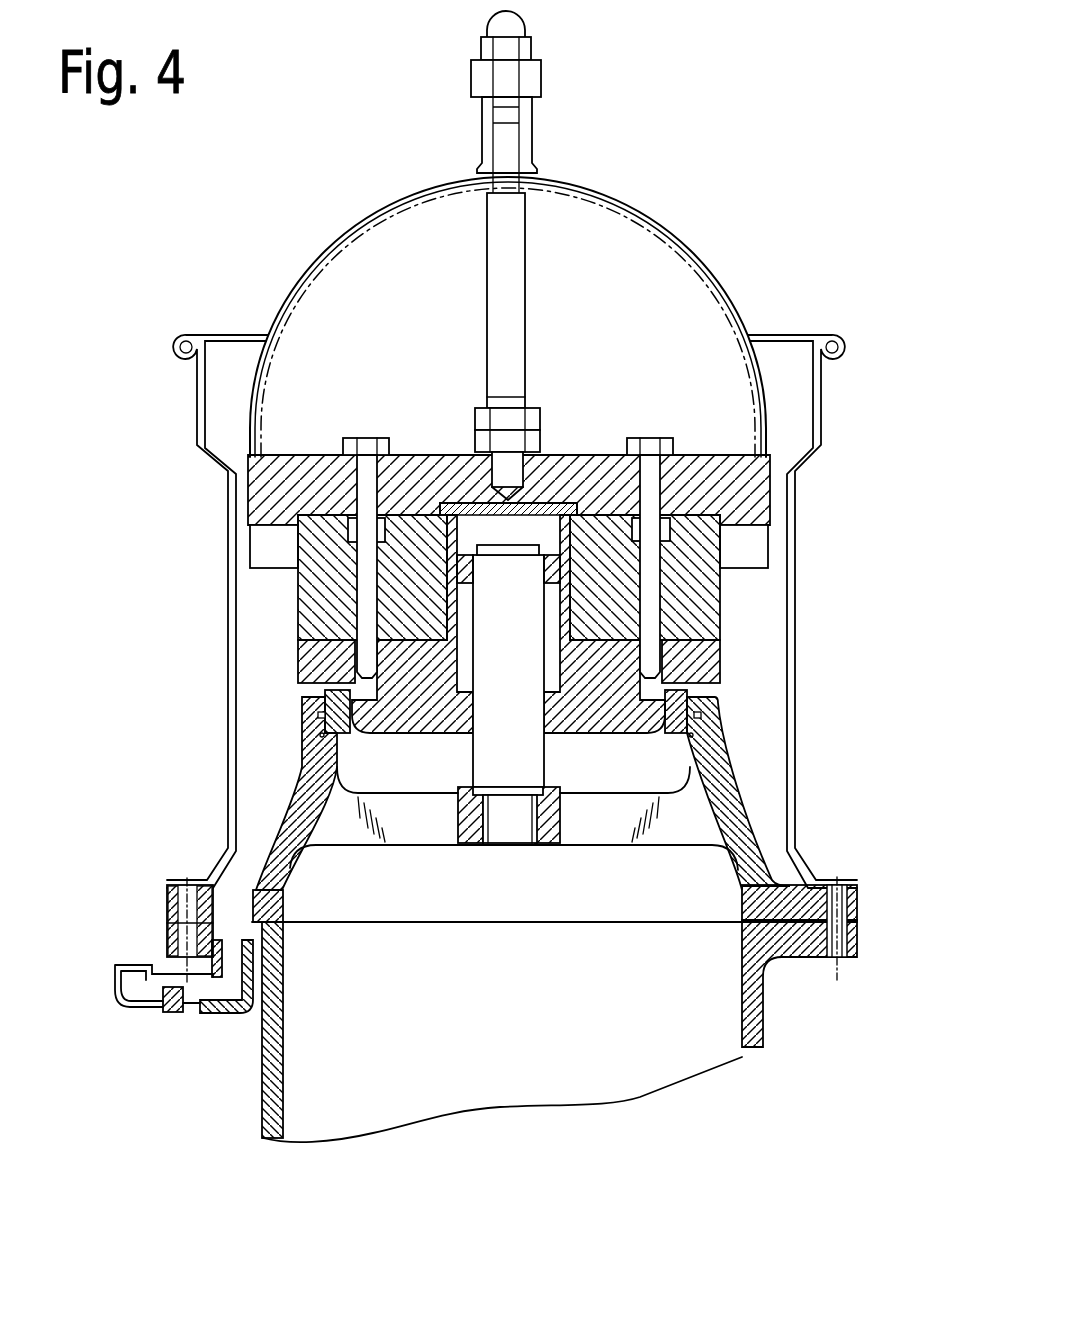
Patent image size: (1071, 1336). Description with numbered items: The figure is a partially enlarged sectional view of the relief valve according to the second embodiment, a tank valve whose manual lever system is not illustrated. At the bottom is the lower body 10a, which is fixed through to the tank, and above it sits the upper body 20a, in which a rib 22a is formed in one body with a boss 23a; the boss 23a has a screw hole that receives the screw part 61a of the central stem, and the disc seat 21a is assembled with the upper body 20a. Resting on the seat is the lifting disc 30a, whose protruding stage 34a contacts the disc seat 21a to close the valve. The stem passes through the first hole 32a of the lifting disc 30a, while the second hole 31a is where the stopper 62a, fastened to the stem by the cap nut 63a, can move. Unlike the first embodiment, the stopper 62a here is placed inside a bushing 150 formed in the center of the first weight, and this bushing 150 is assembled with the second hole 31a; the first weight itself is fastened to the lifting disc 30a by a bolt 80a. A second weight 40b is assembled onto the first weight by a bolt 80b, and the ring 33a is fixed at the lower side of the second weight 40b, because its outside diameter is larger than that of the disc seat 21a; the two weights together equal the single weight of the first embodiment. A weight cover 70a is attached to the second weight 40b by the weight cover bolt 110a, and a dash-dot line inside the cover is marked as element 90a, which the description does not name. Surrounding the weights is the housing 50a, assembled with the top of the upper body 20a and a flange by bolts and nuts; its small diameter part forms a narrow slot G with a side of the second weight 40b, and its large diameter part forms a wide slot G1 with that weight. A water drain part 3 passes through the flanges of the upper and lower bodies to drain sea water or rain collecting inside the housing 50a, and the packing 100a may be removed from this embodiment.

The water drain part 3 is at (143, 1050).
The lower body 10a is at (270, 1123).
The upper body 20a is at (280, 822).
The disc seat 21a is at (318, 714).
The rib 22a is at (690, 820).
The boss 23a is at (549, 846).
The lifting disc 30a is at (707, 668).
The second hole 31a is at (553, 667).
The first hole 32a is at (478, 712).
The ring 33a is at (770, 545).
The protruding stage 34a is at (335, 683).
The second weight 40b is at (754, 483).
The housing 50a is at (802, 643).
The screw part 61a is at (485, 815).
The stopper 62a is at (466, 572).
The cap nut 63a is at (547, 553).
The weight cover 70a is at (697, 237).
The bolt 80a is at (655, 592).
The bolt 80b is at (652, 437).
The inner liner 90a is at (585, 196).
The packing 100a is at (467, 503).
The weight cover bolt 110a is at (512, 257).
The bushing 150 is at (455, 592).
The narrow slot G is at (236, 508).
The wide slot G1 is at (226, 364).